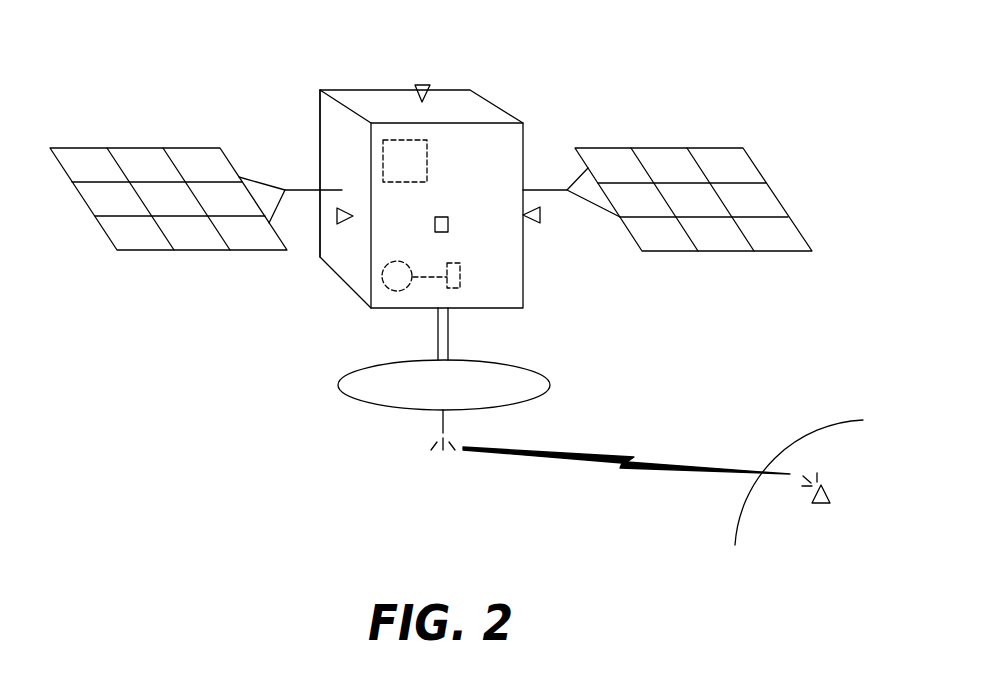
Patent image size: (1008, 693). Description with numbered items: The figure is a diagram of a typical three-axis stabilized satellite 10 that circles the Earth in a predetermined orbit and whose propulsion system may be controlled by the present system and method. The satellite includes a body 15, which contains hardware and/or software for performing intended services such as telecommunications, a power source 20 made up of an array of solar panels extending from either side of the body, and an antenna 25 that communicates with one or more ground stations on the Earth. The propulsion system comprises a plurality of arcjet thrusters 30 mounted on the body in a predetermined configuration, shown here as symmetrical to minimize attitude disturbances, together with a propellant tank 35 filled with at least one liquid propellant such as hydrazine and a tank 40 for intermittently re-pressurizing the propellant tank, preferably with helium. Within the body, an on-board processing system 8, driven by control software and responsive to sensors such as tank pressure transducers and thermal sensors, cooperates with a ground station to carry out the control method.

The three-axis stabilized satellite 10 is at (493, 102).
The body 15 is at (320, 120).
The power source 20 is at (135, 147).
The arcjet thrusters 30 is at (423, 83).
The on-board processing system 8 is at (428, 163).
The propellant tank 35 is at (398, 292).
The tank 40 is at (460, 277).
The antenna 25 is at (550, 387).